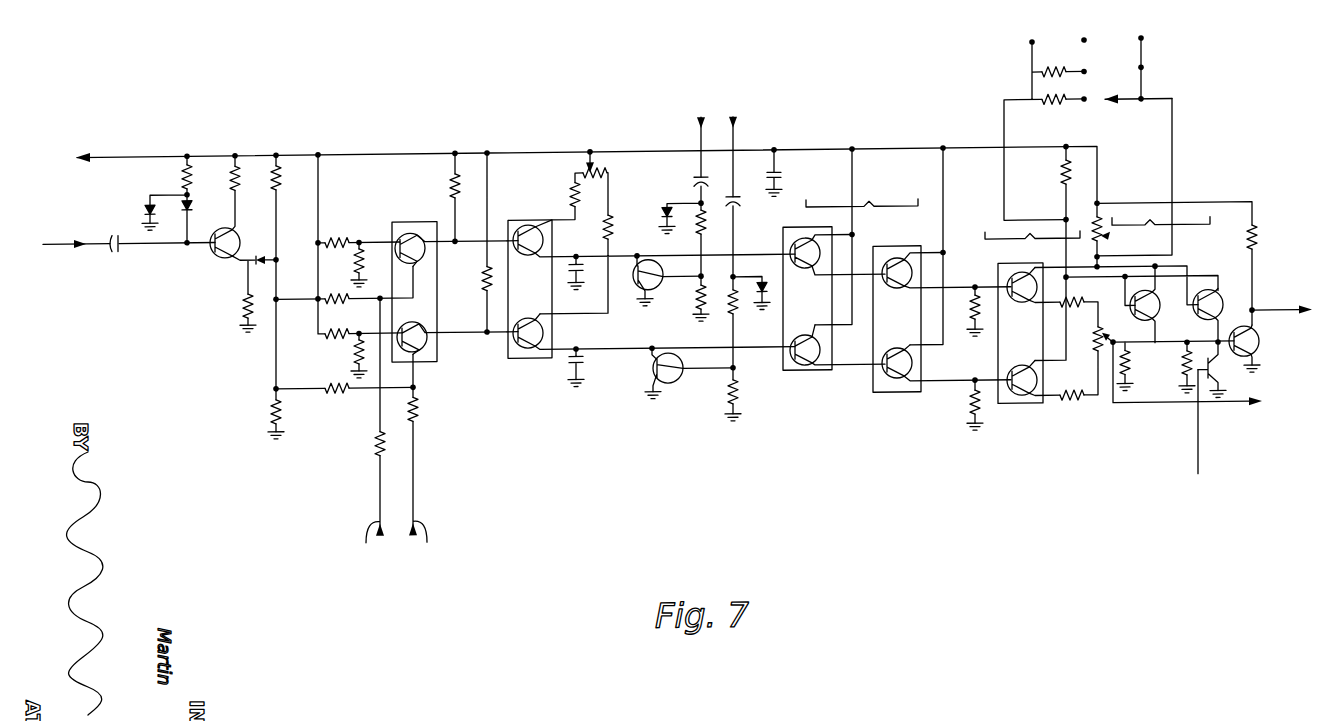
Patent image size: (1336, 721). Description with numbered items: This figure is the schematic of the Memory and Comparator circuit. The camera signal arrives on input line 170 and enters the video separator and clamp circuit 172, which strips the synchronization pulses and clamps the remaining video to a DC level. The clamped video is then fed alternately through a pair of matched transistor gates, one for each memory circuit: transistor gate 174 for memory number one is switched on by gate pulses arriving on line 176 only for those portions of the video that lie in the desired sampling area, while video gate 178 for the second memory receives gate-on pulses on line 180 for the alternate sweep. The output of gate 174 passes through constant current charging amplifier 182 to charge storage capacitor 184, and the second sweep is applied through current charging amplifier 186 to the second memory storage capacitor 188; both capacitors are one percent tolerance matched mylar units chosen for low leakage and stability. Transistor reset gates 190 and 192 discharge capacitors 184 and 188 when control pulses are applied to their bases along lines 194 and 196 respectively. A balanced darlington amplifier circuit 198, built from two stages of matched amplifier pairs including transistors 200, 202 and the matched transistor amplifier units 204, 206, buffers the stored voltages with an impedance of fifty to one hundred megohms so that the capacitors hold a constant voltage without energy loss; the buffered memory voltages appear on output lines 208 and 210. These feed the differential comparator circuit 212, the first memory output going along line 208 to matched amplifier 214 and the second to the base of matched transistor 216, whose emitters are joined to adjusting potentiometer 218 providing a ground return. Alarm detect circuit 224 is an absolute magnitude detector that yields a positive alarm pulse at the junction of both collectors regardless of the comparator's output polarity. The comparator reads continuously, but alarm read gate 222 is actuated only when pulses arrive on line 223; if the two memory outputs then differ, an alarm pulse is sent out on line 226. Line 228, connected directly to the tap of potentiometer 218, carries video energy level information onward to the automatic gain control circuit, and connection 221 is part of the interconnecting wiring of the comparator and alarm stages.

The input line 170 is at (113, 228).
The video separator and clamp circuit 172 is at (221, 263).
The transistor gate 174 is at (412, 237).
The line 176 is at (366, 434).
The video gate 178 is at (425, 359).
The line 180 is at (433, 462).
The constant current charging amplifier 182 is at (527, 225).
The storage capacitor 184 is at (591, 282).
The current charging amplifier 186 is at (526, 354).
The second memory storage capacitor 188 is at (592, 373).
The transistor reset gate 190 is at (649, 258).
The reset gate transistor 192 is at (676, 392).
The line 194 is at (699, 153).
The reset pulse line 196 is at (733, 147).
The balanced darlington amplifier circuit 198 is at (881, 216).
The transistor amplifier 200 is at (801, 276).
The transistor amplifier 202 is at (783, 356).
The matched transistor amplifier unit 204 is at (889, 292).
The matched transistor amplifier unit 206 is at (882, 396).
The output line 208 is at (963, 293).
The output line 210 is at (943, 397).
The differential comparator circuit 212 is at (1043, 247).
The matched amplifier 214 is at (1019, 308).
The matched transistor 216 is at (1018, 412).
The adjusting potentiometer 218 is at (1096, 361).
The feedback line 221 is at (1172, 177).
The alarm read gate 222 is at (1222, 385).
The line 223 is at (1202, 434).
The alarm detect circuit 224 is at (1160, 236).
The line 226 is at (1270, 318).
The line 228 is at (1150, 416).